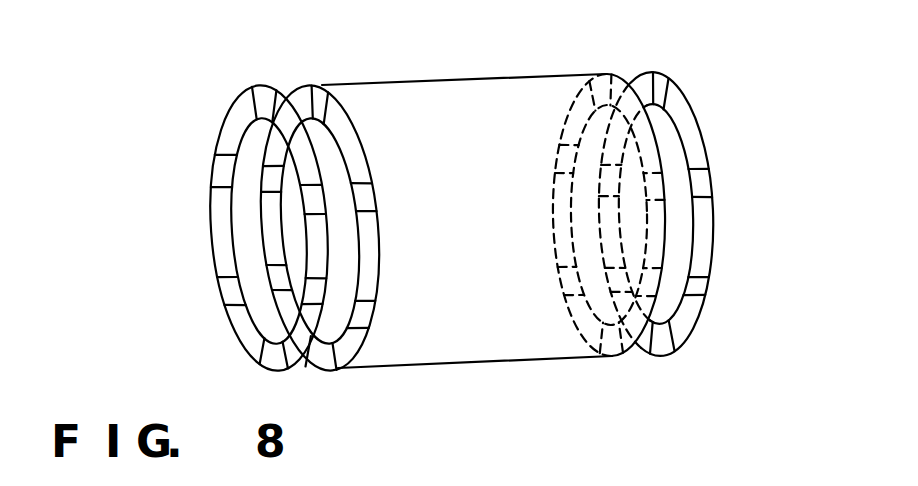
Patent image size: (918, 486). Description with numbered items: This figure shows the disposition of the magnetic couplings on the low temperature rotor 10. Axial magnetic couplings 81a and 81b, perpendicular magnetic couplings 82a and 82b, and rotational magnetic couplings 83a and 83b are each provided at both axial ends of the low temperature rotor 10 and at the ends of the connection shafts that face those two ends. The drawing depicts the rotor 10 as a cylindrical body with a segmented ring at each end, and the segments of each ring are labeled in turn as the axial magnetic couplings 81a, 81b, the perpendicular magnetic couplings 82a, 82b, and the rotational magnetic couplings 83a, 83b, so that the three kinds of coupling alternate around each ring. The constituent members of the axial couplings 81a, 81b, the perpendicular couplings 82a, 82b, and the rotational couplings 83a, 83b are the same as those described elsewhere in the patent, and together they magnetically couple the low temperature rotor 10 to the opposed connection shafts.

The low temperature rotor 10 is at (533, 77).
The axial magnetic coupling 81a is at (322, 94).
The axial magnetic coupling 81b is at (262, 93).
The perpendicular magnetic coupling 82a is at (370, 320).
The perpendicular magnetic coupling 82b is at (222, 168).
The rotational magnetic coupling 83a is at (372, 190).
The rotational magnetic coupling 83b is at (320, 200).